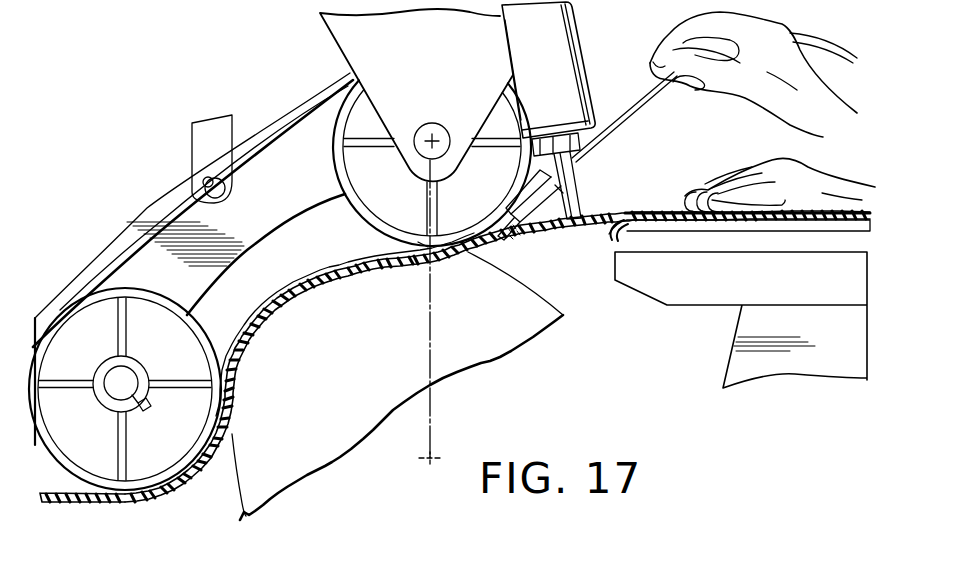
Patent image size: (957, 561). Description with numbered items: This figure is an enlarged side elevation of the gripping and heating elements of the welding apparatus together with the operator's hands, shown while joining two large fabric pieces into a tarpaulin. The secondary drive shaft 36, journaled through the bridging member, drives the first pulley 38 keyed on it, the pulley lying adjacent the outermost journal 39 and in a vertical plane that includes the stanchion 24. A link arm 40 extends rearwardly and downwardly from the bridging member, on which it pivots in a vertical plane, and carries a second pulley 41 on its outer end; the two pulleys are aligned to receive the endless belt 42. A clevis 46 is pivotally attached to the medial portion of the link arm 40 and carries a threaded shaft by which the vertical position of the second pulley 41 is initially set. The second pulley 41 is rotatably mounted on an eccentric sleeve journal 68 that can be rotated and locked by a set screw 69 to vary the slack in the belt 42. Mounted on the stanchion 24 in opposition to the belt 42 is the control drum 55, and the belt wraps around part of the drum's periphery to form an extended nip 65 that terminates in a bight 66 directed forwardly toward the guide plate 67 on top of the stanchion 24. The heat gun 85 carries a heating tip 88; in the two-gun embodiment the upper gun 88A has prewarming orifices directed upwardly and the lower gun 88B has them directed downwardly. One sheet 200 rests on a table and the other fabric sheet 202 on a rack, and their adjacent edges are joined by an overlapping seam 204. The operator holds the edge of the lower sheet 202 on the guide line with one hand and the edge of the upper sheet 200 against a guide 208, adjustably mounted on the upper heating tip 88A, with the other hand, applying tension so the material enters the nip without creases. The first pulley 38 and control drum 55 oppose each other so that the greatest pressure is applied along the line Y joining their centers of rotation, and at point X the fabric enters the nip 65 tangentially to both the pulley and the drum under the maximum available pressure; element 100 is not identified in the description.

The stanchion 24 is at (733, 333).
The secondary drive shaft 36 is at (428, 123).
The first pulley 38 is at (340, 160).
The outermost journal 39 is at (420, 51).
The link arm 40 is at (147, 208).
The second pulley 41 is at (57, 448).
The endless belt 42 is at (243, 343).
The clevis 46 is at (196, 134).
The control drum 55 is at (238, 514).
The extended nip 65 is at (268, 300).
The bight 66 is at (523, 240).
The guide plate 67 is at (724, 224).
The eccentric sleeve journal 68 is at (110, 402).
The set screw 69 is at (150, 407).
The heat gun 85 is at (588, 42).
The heating tip 88 is at (515, 207).
The upper gun 88A is at (540, 203).
The lower gun 88B is at (553, 238).
The holder 100 is at (518, 74).
The sheet 200 is at (617, 123).
The fabric sheet 202 is at (622, 212).
The overlapping seam 204 is at (58, 505).
The guide 208 is at (572, 153).
The point X is at (423, 243).
The line Y is at (428, 309).